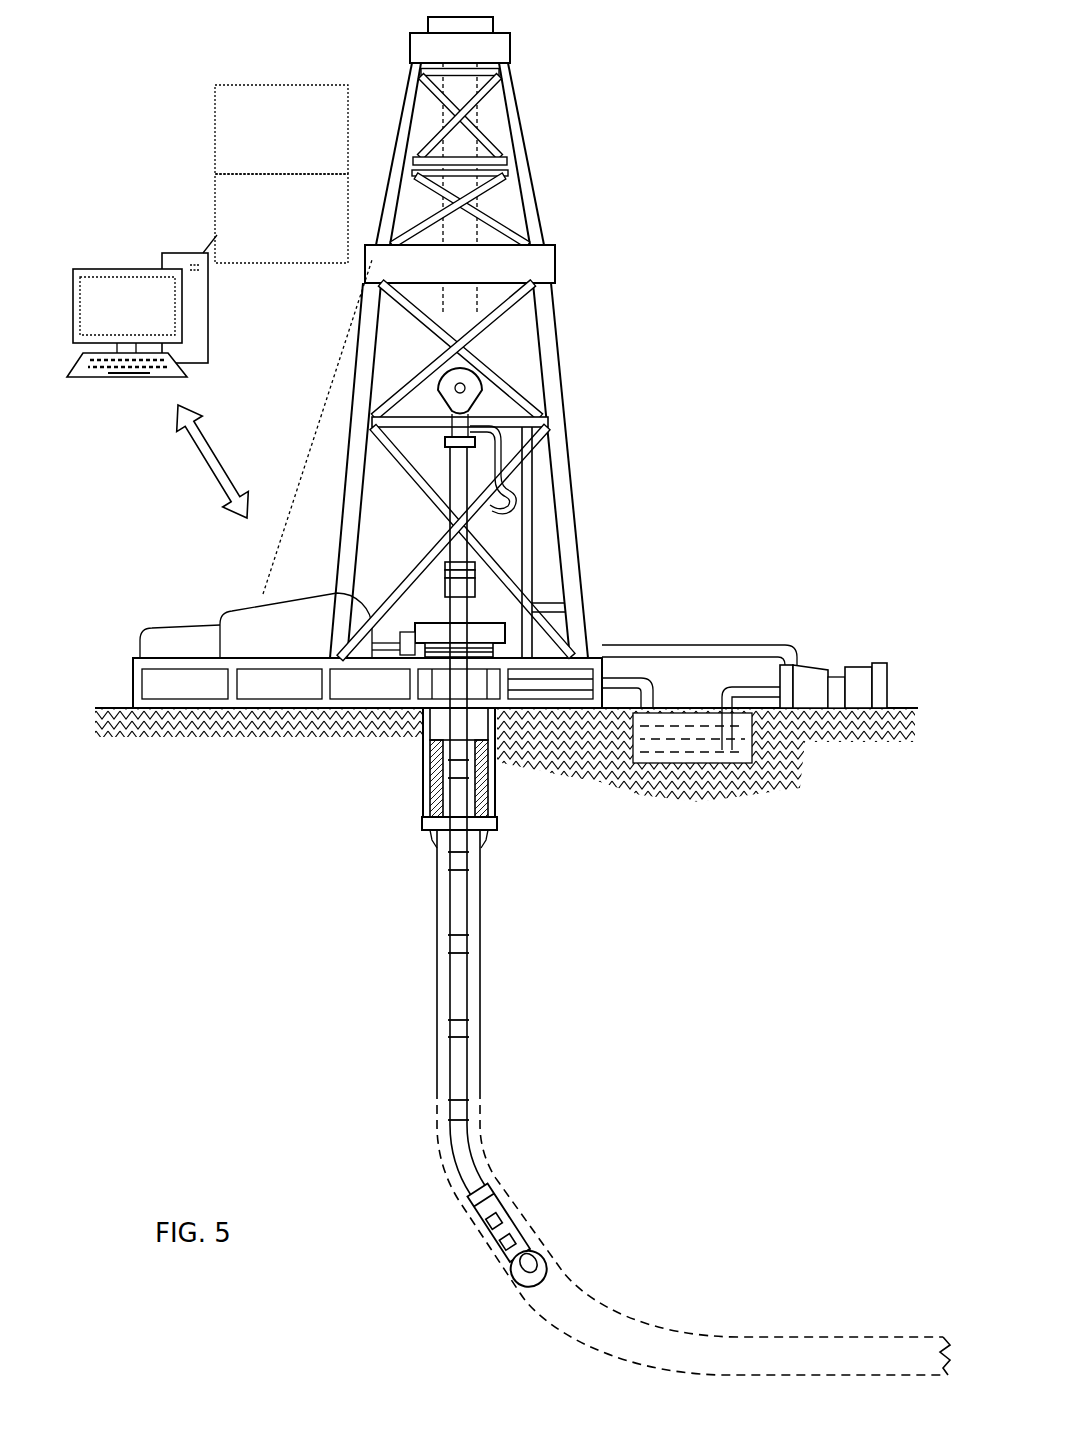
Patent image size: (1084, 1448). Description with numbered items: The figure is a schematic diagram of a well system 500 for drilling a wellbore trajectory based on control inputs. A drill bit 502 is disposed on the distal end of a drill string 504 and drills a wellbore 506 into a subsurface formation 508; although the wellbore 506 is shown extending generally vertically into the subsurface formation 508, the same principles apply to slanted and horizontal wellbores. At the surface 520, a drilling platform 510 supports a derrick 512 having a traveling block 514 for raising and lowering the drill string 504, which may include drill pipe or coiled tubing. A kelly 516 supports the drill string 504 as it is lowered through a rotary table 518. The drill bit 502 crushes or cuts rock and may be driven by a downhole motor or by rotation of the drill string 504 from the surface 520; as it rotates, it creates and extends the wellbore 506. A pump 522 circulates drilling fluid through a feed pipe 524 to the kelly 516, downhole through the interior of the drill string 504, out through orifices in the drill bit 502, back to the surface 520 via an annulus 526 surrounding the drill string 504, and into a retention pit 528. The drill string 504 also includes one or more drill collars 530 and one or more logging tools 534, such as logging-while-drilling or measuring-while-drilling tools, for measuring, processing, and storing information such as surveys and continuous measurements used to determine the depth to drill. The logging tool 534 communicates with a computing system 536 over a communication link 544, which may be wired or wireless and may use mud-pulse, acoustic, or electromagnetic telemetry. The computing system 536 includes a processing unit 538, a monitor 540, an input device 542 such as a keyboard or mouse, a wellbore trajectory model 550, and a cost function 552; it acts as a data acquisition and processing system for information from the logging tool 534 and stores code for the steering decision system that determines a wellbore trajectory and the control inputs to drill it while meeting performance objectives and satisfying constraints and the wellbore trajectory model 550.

The well system 500 is at (668, 177).
The drill bit 502 is at (553, 1267).
The drill string 504 is at (470, 917).
The wellbore 506 is at (482, 975).
The subsurface formation 508 is at (737, 1030).
The drilling platform 510 is at (133, 673).
The derrick 512 is at (521, 143).
The traveling block 514 is at (484, 390).
The kelly 516 is at (495, 466).
The rotary table 518 is at (485, 618).
The surface 520 is at (897, 705).
The pump 522 is at (800, 662).
The feed pipe 524 is at (713, 642).
The annulus 526 is at (445, 868).
The retention pit 528 is at (700, 765).
The drill collar 530 is at (497, 1222).
The logging tool 534 is at (527, 1237).
The computing system 536 is at (104, 255).
The processing unit 538 is at (213, 333).
The monitor 540 is at (76, 295).
The input device 542 is at (83, 378).
The communication link 544 is at (215, 432).
The wellbore trajectory model 550 is at (281, 217).
The cost function 552 is at (281, 129).